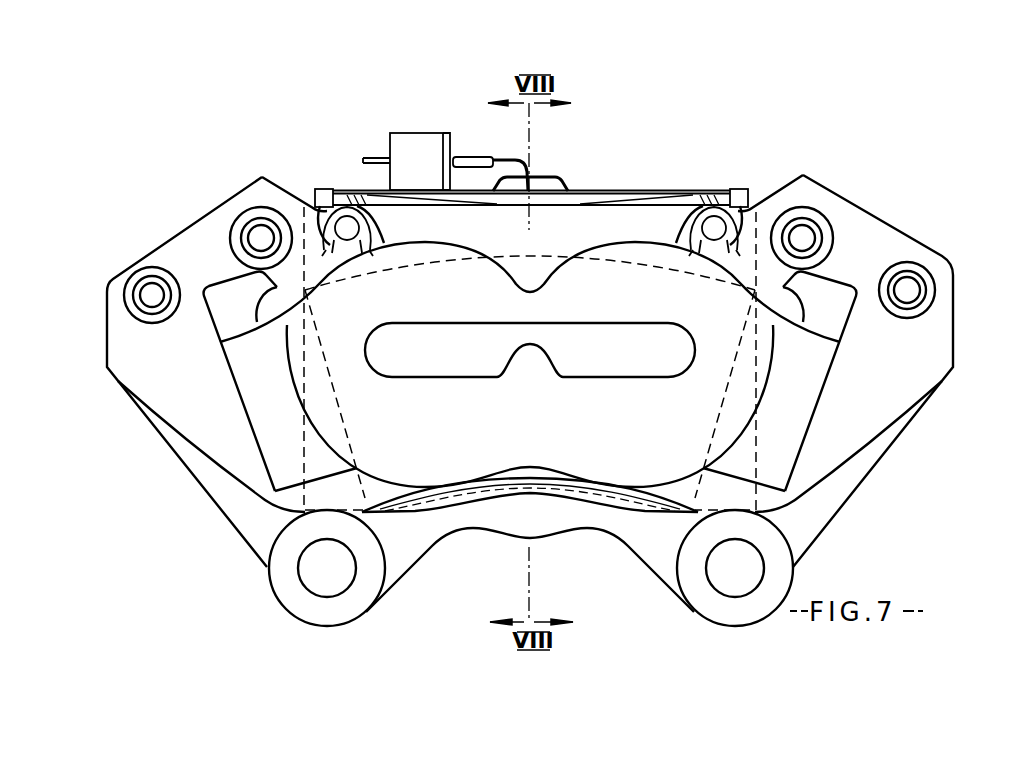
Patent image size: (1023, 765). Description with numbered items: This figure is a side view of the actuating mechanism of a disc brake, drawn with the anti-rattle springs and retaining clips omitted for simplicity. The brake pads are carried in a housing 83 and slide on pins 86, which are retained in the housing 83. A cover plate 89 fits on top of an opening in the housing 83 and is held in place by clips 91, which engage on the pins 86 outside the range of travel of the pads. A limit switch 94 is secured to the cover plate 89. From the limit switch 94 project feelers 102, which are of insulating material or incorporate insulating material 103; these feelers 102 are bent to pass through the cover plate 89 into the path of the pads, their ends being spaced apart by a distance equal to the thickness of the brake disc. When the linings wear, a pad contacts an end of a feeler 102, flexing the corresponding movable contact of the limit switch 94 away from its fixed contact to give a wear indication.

The housing 83 is at (945, 293).
The pins 86 is at (349, 243).
The cover plate 89 is at (567, 187).
The clips 91 is at (332, 222).
The limit switch 94 is at (394, 133).
The feelers 102 is at (523, 157).
The insulating material 103 is at (493, 156).